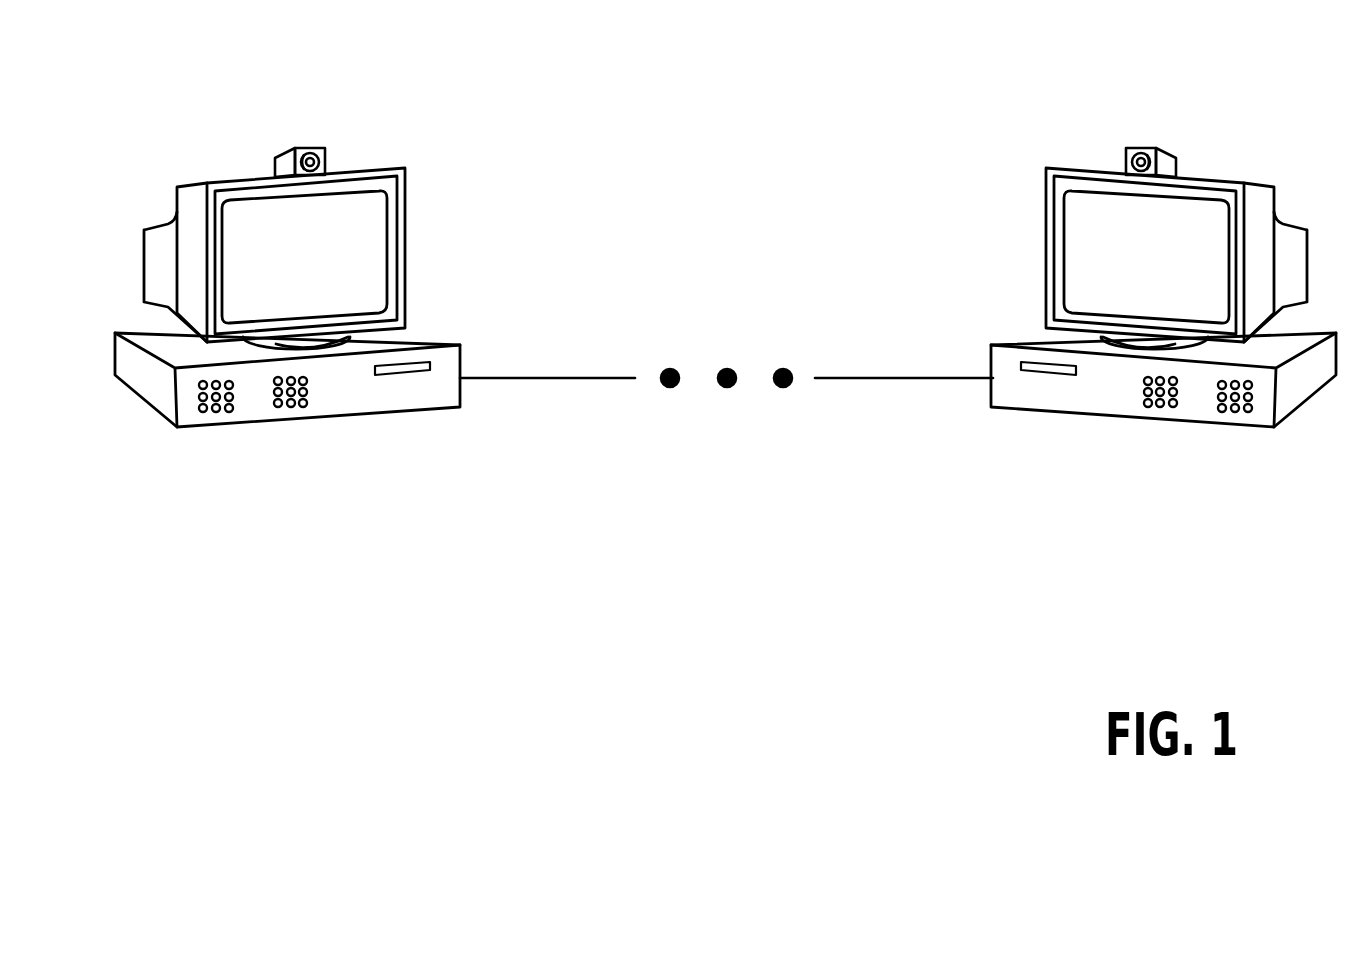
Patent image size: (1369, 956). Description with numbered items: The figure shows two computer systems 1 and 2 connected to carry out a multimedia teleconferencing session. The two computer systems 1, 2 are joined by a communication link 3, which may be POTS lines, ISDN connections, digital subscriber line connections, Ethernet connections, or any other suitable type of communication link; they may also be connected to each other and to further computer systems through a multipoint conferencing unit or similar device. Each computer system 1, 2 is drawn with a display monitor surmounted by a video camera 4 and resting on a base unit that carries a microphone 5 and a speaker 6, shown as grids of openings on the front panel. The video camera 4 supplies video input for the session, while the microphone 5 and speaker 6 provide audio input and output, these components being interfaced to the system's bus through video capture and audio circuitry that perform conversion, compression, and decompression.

The computer system 1 is at (326, 278).
The computer system 2 is at (1163, 254).
The communication link 3 is at (518, 377).
The video camera 4 is at (310, 147).
The microphone 5 is at (217, 413).
The speaker 6 is at (291, 409).